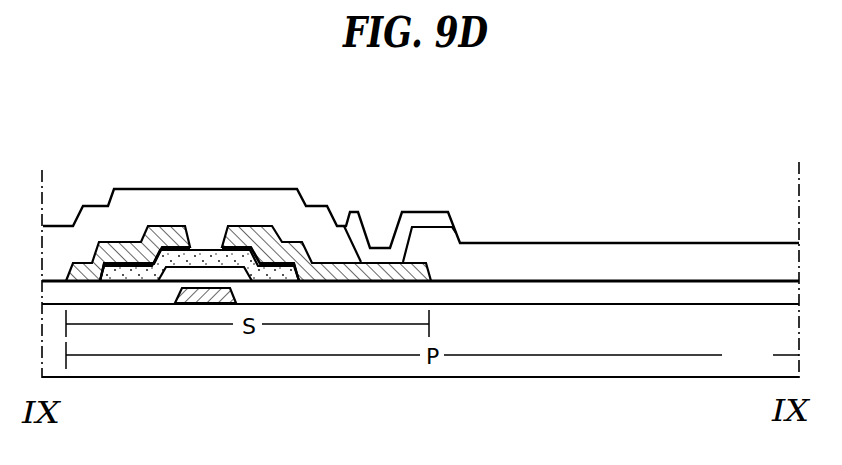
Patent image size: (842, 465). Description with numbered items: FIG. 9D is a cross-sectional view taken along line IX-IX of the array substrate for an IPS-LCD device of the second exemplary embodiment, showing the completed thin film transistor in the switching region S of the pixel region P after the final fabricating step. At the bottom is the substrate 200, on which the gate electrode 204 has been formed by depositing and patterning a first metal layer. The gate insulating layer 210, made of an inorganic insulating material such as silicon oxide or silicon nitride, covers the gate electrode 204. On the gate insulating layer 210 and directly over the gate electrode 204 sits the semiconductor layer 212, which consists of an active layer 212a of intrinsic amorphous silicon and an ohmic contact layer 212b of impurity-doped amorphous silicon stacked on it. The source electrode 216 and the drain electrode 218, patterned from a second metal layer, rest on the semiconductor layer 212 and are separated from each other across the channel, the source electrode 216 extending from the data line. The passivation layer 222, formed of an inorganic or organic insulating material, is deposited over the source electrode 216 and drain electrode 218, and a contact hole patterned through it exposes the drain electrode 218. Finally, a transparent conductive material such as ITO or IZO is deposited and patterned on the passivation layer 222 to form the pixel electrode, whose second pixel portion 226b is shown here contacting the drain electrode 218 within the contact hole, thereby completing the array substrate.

The substrate 200 is at (767, 368).
The gate electrode 204 is at (218, 290).
The gate insulating layer 210 is at (723, 284).
The semiconductor layer 212 is at (224, 193).
The active layer 212a is at (215, 257).
The ohmic contact layer 212b is at (281, 258).
The source electrode 216 is at (102, 240).
The drain electrode 218 is at (417, 262).
The passivation layer 222 is at (530, 245).
The second pixel portion 226b is at (352, 243).